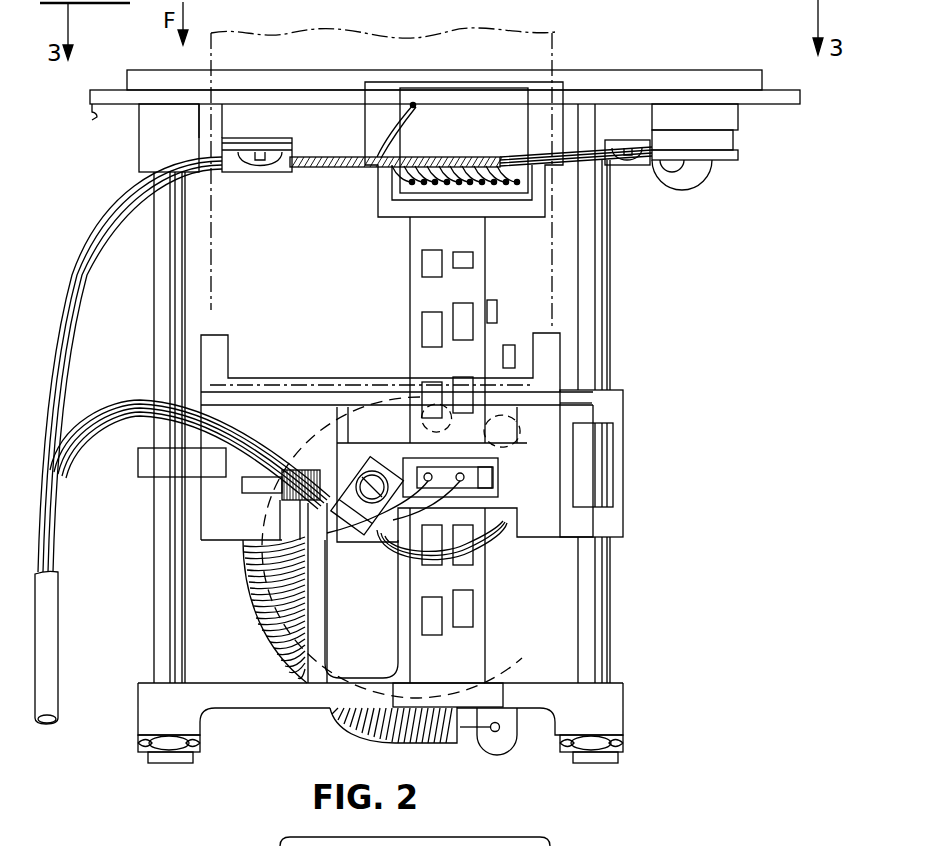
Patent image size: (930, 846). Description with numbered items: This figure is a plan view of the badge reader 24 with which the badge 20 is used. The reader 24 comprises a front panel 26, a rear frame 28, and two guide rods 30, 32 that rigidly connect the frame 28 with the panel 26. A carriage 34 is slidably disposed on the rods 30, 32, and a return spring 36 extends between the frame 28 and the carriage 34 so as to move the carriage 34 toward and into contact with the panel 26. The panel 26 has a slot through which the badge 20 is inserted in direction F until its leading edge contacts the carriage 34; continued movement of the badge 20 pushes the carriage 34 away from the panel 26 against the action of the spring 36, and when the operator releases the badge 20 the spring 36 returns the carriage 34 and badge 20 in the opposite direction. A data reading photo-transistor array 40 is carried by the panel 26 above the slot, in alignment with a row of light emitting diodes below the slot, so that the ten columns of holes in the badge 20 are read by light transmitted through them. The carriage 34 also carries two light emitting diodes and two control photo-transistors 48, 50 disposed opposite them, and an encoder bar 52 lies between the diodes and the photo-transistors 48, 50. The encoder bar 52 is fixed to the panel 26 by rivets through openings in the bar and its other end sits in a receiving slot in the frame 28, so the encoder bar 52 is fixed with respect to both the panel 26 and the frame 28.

The badge 20 is at (557, 40).
The reader 24 is at (306, 720).
The front panel 26 is at (90, 129).
The rear frame 28 is at (624, 707).
The guide rod 30 is at (612, 312).
The guide rod 32 is at (154, 321).
The carriage 34 is at (138, 462).
The return spring 36 is at (254, 641).
The data reading photo-transistor array 40 is at (497, 129).
The control photo-transistor 48 is at (428, 473).
The control photo-transistor 50 is at (464, 477).
The encoder bar 52 is at (408, 300).